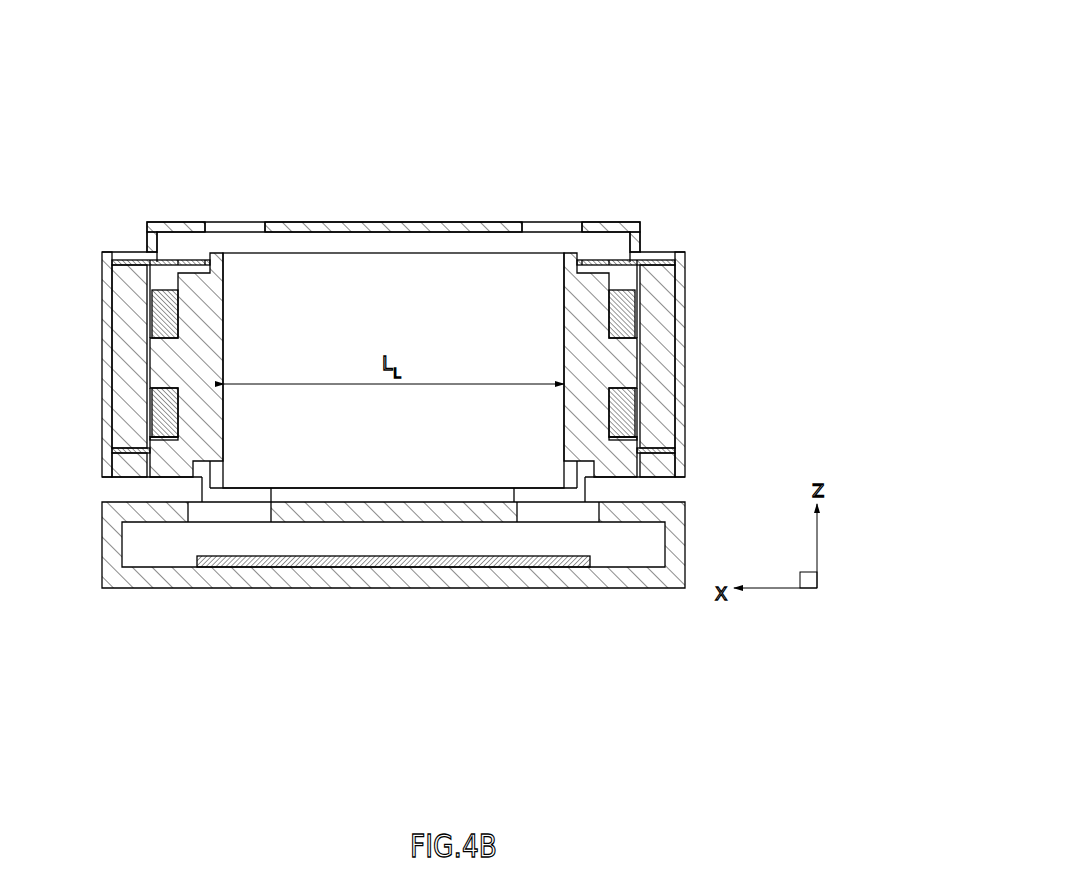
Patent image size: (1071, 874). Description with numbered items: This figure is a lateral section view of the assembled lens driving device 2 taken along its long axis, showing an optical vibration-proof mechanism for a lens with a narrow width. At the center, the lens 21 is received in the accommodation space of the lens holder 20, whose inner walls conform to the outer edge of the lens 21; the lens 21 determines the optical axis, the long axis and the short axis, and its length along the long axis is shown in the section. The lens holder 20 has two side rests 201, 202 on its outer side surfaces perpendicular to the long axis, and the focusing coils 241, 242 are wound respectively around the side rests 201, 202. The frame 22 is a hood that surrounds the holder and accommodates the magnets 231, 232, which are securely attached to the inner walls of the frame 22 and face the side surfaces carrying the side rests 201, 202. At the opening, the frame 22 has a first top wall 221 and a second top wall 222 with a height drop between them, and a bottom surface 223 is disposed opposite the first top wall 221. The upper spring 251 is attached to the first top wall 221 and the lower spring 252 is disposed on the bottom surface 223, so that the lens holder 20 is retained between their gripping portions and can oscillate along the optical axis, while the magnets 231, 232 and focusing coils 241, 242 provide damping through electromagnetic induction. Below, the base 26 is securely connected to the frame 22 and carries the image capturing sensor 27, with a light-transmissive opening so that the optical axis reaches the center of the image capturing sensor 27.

The lens driving device 2 is at (669, 98).
The lens holder 20 is at (208, 296).
The side rest 201 is at (162, 383).
The side rest 202 is at (622, 383).
The lens 21 is at (408, 260).
The frame 22 is at (358, 227).
The first top wall 221 is at (667, 253).
The second top wall 222 is at (598, 228).
The bottom surface 223 is at (664, 455).
The magnet 231 is at (130, 342).
The magnet 232 is at (658, 342).
The focusing coil 241 is at (152, 296).
The focusing coil 242 is at (632, 293).
The upper spring 251 is at (620, 262).
The lower spring 252 is at (667, 448).
The base 26 is at (145, 513).
The image capturing sensor 27 is at (570, 563).